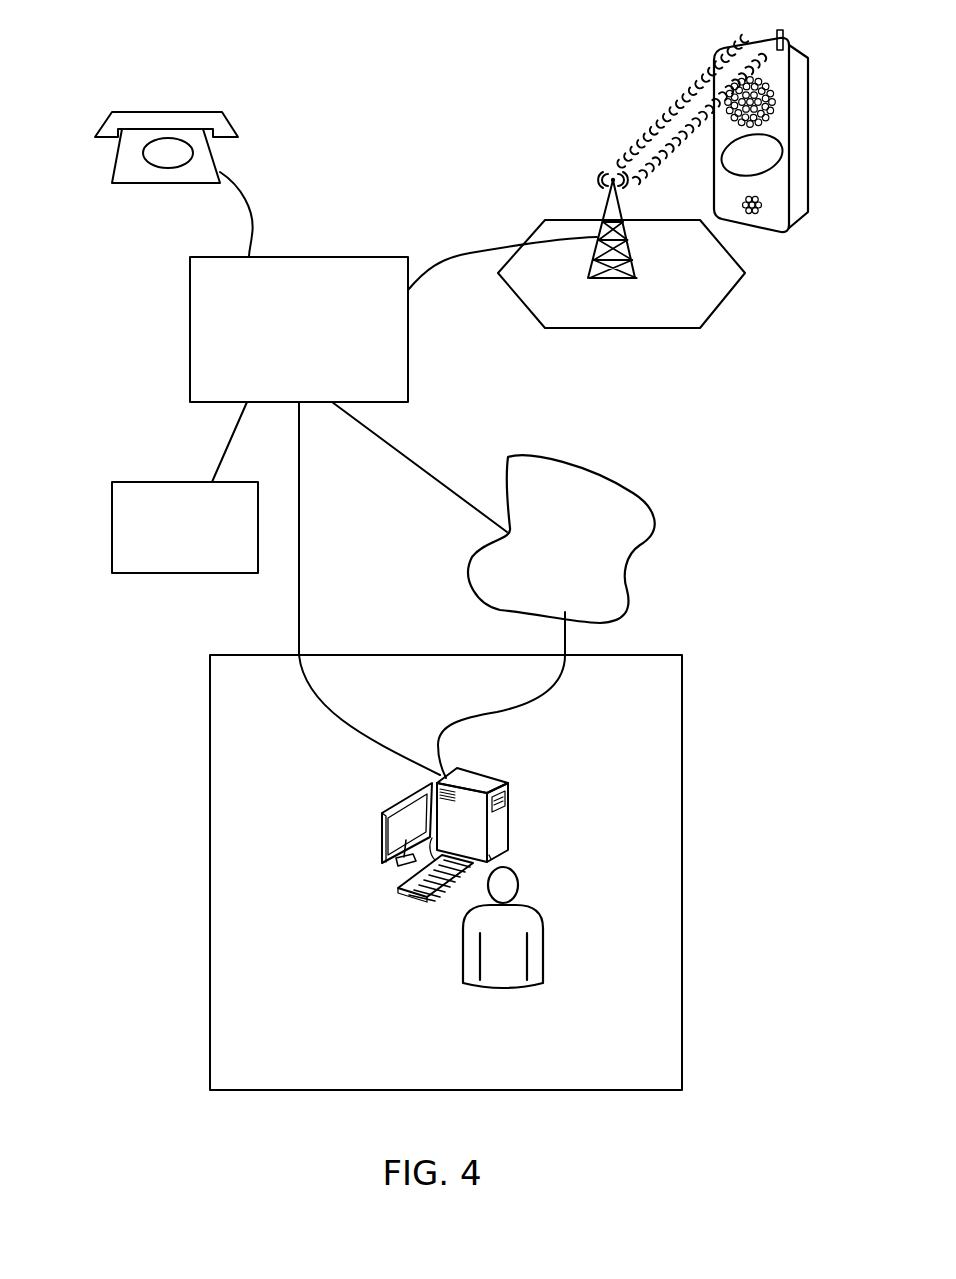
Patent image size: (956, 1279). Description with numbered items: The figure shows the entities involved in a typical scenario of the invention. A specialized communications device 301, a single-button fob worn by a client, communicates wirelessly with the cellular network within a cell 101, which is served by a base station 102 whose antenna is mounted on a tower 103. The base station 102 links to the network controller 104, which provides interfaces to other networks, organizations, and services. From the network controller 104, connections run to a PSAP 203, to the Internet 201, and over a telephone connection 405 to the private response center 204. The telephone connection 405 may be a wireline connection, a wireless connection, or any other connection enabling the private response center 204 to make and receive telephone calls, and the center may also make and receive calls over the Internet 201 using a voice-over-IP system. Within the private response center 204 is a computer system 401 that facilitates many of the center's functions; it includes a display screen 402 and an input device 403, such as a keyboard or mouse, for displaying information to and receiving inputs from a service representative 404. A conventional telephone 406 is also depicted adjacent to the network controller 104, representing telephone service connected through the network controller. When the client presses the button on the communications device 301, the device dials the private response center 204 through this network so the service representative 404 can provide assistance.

The cell 101 is at (553, 228).
The base station 102 is at (602, 273).
The tower 103 is at (603, 203).
The network controller 104 is at (190, 320).
The Internet 201 is at (620, 482).
The PSAP 203 is at (138, 481).
The private response center 204 is at (240, 655).
The communications device 301 is at (798, 210).
The computer system 401 is at (513, 790).
The display screen 402 is at (395, 825).
The input device 403 is at (408, 897).
The service representative 404 is at (547, 935).
The telephone connection 405 is at (300, 505).
The telephone 406 is at (119, 184).